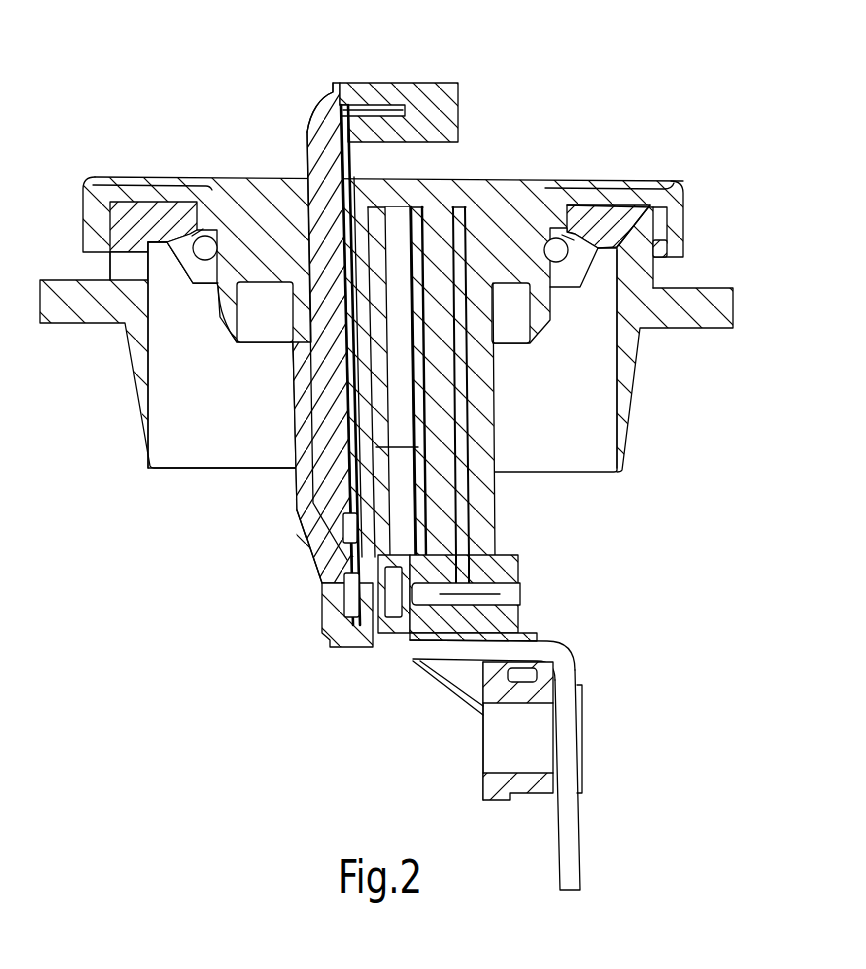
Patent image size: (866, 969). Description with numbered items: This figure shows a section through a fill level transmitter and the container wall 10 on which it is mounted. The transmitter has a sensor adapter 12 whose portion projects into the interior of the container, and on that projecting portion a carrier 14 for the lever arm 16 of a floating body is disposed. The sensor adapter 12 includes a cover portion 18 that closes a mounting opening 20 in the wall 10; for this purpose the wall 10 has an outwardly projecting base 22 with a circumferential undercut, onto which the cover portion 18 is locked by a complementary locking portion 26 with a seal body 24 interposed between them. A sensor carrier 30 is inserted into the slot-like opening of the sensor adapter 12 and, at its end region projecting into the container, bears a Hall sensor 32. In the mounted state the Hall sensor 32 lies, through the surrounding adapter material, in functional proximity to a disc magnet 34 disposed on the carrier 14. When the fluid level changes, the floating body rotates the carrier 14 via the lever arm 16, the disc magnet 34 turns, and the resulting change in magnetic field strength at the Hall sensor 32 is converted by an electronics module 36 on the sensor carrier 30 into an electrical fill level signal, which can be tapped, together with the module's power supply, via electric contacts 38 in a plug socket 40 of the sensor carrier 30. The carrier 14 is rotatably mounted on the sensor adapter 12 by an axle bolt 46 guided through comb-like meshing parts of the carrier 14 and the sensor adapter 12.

The wall 10 is at (711, 310).
The sensor adapter 12 is at (507, 173).
The carrier 14 is at (514, 620).
The lever arm 16 is at (572, 850).
The cover portion 18 is at (212, 204).
The mounting opening 20 is at (615, 314).
The base 22 is at (635, 279).
The seal body 24 is at (556, 248).
The locking portion 26 is at (669, 248).
The sensor carrier 30 is at (304, 125).
The Hall sensor 32 is at (368, 602).
The disc magnet 34 is at (398, 607).
The electronics module 36 is at (347, 530).
The electric contacts 38 is at (383, 107).
The plug socket 40 is at (430, 83).
The axle bolt 46 is at (510, 597).